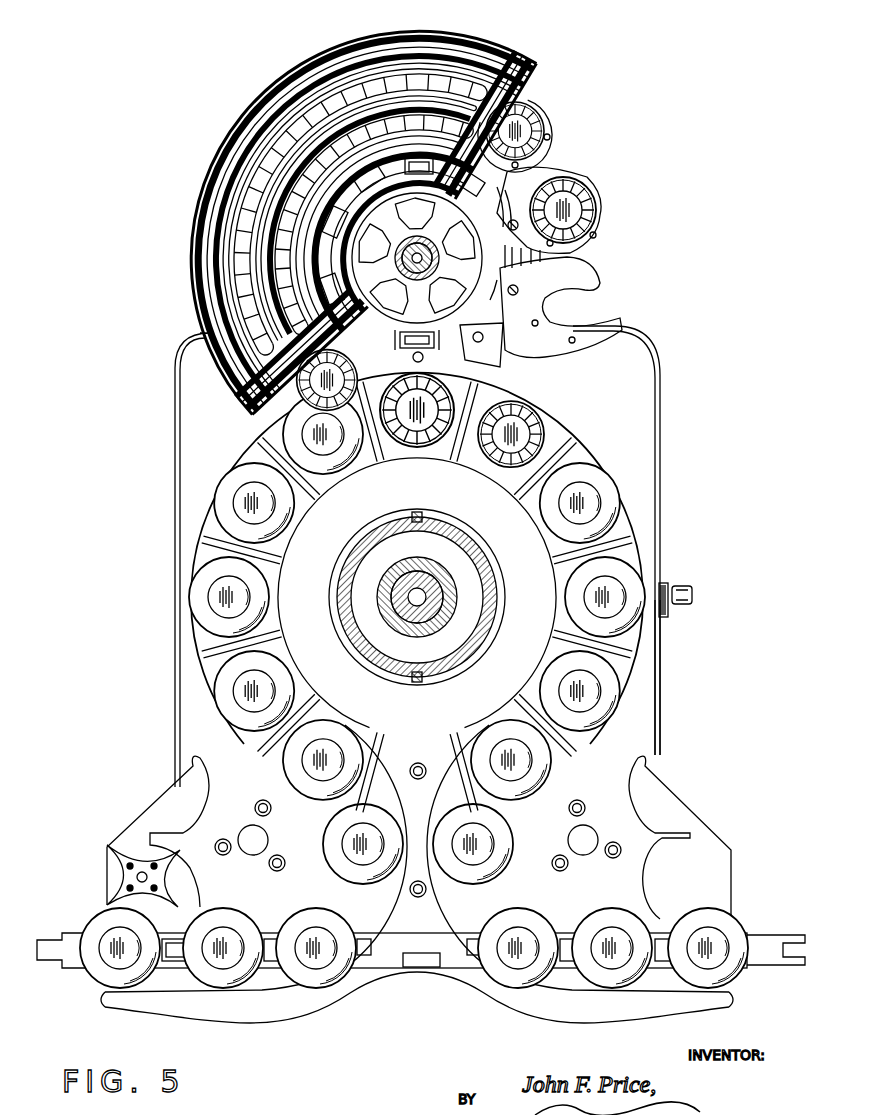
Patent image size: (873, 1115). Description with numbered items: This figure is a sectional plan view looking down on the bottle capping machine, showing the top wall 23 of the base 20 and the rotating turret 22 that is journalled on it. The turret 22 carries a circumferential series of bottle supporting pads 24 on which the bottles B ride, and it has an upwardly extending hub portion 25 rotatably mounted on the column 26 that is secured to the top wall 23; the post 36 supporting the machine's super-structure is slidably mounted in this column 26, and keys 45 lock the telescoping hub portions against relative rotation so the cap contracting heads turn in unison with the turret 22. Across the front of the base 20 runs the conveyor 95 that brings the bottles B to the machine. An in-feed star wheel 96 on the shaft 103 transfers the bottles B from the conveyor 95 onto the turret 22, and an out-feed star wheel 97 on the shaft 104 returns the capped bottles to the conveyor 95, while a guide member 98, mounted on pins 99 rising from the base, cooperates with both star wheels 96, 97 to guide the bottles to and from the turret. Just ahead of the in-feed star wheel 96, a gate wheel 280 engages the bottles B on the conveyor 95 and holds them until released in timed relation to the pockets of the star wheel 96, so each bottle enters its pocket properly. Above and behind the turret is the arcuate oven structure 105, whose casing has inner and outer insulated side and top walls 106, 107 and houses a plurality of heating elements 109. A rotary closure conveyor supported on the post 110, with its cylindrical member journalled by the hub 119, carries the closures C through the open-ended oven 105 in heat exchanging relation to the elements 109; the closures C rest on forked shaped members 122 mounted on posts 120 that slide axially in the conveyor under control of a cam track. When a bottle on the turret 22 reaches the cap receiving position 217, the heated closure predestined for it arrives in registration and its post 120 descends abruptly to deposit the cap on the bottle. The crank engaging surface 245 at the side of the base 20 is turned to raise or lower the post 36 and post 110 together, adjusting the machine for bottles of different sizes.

The base 20 is at (663, 735).
The turret 22 is at (190, 636).
The top wall 23 is at (417, 556).
The bottle supporting pads 24 is at (245, 455).
The hub portion 25 is at (367, 628).
The column 26 is at (433, 628).
The post 36 is at (444, 588).
The keys 45 is at (425, 518).
The conveyor 95 is at (73, 965).
The star wheel 96 is at (196, 831).
The out-feed star wheel 97 is at (641, 838).
The guide member 98 is at (365, 988).
The pins 99 is at (422, 769).
The shaft 103 is at (268, 840).
The shaft 104 is at (588, 834).
The oven structure 105 is at (350, 217).
The inner insulated side and top walls 106 is at (482, 50).
The outer insulated side and top walls 107 is at (526, 66).
The heating elements 109 is at (315, 105).
The post 110 is at (436, 271).
The hub 119 is at (430, 237).
The posts 120 is at (420, 333).
The forked shaped member 122 is at (580, 280).
The cap receiving position 217 is at (421, 468).
The crank engaging surface 245 is at (683, 595).
The gate wheel 280 is at (138, 860).
The bottles B is at (102, 980).
The closures C is at (598, 214).